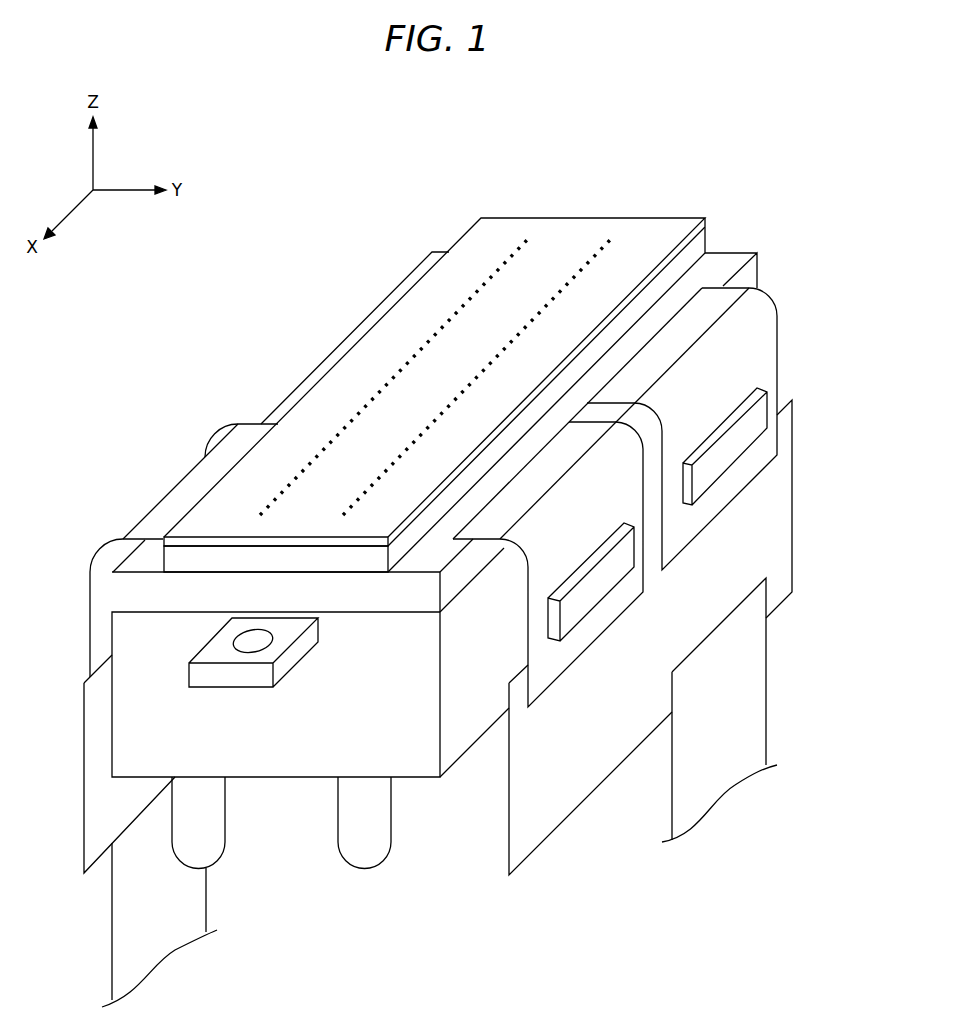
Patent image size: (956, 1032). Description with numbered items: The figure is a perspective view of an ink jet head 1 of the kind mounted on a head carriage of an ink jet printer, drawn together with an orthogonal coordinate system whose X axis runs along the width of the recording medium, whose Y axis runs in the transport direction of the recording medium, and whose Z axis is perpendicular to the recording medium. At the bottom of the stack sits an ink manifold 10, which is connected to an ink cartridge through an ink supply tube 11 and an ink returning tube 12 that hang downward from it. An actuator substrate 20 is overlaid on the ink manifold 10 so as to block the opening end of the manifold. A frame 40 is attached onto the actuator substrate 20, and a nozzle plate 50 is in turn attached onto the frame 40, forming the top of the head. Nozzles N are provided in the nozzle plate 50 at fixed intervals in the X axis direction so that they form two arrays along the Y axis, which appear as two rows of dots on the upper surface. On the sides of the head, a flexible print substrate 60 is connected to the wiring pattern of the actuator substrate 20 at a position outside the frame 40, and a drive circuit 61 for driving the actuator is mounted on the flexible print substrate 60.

The ink jet head 1 is at (557, 127).
The ink manifold 10 is at (127, 727).
The ink supply tube 11 is at (208, 825).
The ink returning tube 12 is at (376, 825).
The actuator substrate 20 is at (127, 595).
The frame 40 is at (175, 562).
The nozzle plate 50 is at (468, 248).
The nozzles N is at (397, 373).
The flexible print substrate 60 is at (213, 453).
The drive circuit 61 is at (590, 592).